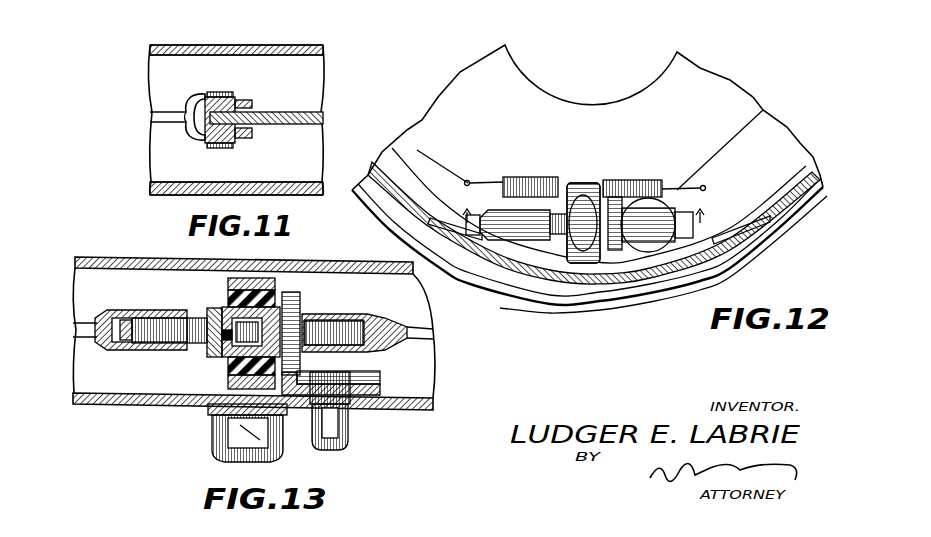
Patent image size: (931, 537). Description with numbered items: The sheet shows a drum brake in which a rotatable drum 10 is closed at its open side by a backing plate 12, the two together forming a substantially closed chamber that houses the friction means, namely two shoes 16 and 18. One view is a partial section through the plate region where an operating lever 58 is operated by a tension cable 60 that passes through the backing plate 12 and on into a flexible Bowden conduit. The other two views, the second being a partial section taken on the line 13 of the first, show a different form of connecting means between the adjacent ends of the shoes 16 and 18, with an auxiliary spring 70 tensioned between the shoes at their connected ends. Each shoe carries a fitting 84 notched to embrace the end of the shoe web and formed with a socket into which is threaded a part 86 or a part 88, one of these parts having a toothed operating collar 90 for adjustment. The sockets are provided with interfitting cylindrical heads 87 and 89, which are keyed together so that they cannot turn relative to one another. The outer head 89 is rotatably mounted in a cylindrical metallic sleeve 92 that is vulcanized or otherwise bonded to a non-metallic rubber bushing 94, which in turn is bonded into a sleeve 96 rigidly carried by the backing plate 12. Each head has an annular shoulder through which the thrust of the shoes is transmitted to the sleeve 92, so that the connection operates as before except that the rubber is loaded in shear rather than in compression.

In FIG. 11, the rotatable drum 10 is at (243, 53).
In FIG. 12, the rotatable drum 10 is at (767, 233).
In FIG. 13, the rotatable drum 10 is at (130, 258).
In FIG. 11, the backing plate 12 is at (150, 183).
In FIG. 12, the backing plate 12 is at (507, 82).
In FIG. 13, the backing plate 12 is at (115, 403).
In FIG. 12, the section line 13— 13 is at (585, 210).
In FIG. 12, the shoe 16 is at (417, 150).
In FIG. 13, the shoe 16 is at (76, 325).
In FIG. 12, the shoe 18 is at (763, 145).
In FIG. 13, the shoe 18 is at (433, 330).
In FIG. 11, the operating lever 58 is at (168, 117).
In FIG. 11, the tension cable 60 is at (300, 117).
In FIG. 12, the auxiliary spring 70 is at (517, 183).
In FIG. 12, the fitting 84 is at (523, 197).
In FIG. 13, the fitting 84 is at (112, 318).
In FIG. 12, the threaded part 86 is at (560, 203).
In FIG. 13, the threaded part 86 is at (160, 320).
In FIG. 13, the cylindrical head 87 is at (214, 318).
In FIG. 12, the threaded part 88 is at (632, 177).
In FIG. 13, the threaded part 88 is at (327, 325).
In FIG. 13, the cylindrical head 89 is at (255, 318).
In FIG. 12, the toothed operating collar 90 is at (613, 253).
In FIG. 13, the toothed operating collar 90 is at (297, 292).
In FIG. 13, the cylindrical metallic sleeve 92 is at (217, 360).
In FIG. 13, the rubber bushing 94 is at (218, 385).
In FIG. 12, the sleeve 96 is at (578, 258).
In FIG. 13, the sleeve 96 is at (250, 278).